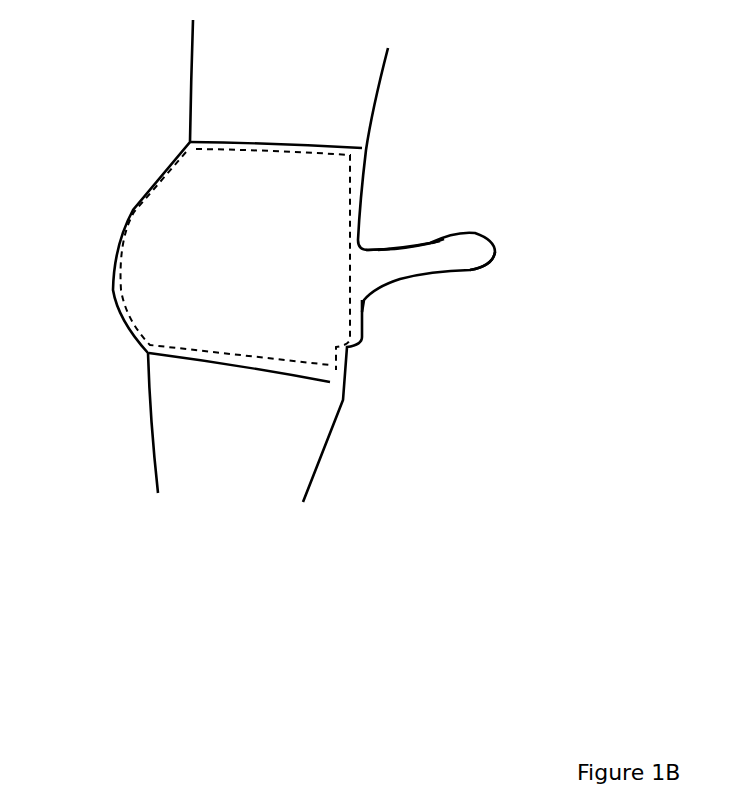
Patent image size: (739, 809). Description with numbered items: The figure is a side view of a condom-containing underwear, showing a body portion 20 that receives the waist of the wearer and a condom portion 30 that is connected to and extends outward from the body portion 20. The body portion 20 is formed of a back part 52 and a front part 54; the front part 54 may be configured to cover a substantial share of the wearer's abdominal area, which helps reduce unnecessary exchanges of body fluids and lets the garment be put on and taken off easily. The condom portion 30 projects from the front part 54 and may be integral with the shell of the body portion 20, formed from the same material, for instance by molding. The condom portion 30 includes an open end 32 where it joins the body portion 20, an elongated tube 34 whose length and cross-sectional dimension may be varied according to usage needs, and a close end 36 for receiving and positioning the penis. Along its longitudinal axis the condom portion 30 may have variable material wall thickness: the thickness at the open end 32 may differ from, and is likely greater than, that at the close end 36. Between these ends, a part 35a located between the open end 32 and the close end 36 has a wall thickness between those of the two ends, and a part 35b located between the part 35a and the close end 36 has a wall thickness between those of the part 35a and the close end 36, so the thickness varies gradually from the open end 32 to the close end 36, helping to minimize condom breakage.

The body portion 20 is at (146, 264).
The back part 52 is at (157, 135).
The front part 54 is at (384, 178).
The condom portion 30 is at (426, 293).
The open end 32 is at (376, 263).
The elongated tube 34 is at (417, 257).
The close end 36 is at (474, 256).
The part 35a is at (389, 231).
The part 35b is at (438, 229).